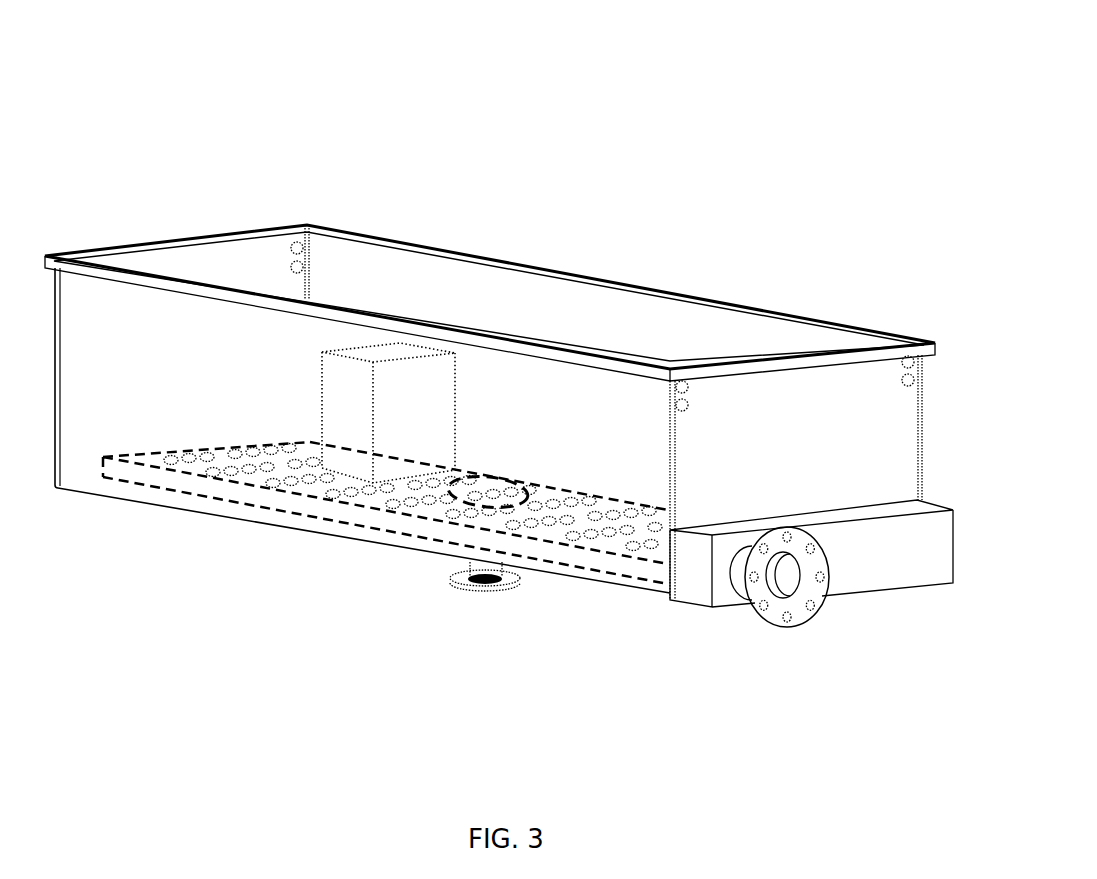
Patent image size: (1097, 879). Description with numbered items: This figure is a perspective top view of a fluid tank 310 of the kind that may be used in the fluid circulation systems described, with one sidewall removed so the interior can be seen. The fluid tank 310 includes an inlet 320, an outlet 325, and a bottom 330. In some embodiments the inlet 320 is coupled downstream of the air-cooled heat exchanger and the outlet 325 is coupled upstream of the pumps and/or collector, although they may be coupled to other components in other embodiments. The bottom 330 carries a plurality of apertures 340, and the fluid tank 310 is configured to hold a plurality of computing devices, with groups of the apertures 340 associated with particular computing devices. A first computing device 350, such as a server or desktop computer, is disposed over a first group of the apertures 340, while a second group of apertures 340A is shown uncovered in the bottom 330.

The fluid tank 310 is at (360, 128).
The inlet 320 is at (480, 588).
The outlet 325 is at (777, 618).
The bottom 330 is at (225, 452).
The plurality of apertures 340 is at (530, 504).
The second group of apertures 340A is at (488, 478).
The first computing device 350 is at (433, 431).